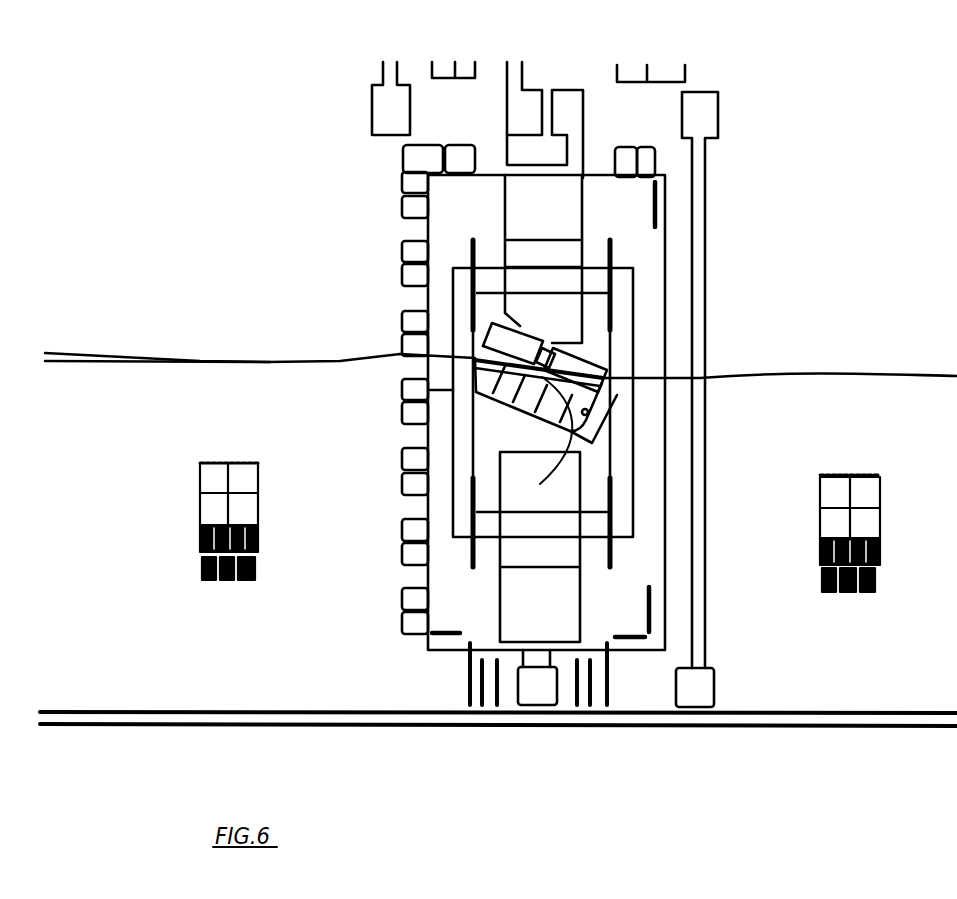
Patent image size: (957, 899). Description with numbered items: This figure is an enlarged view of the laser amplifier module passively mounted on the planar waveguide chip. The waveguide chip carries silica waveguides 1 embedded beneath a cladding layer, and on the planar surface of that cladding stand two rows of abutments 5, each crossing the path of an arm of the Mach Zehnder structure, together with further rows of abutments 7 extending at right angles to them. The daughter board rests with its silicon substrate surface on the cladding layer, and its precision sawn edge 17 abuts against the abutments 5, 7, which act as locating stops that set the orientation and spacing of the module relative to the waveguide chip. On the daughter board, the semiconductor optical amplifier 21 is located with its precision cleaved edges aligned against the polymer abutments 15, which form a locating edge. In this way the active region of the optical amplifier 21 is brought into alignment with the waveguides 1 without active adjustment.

The silica waveguides 1 is at (268, 362).
The abutments 5 is at (400, 602).
The abutments 7 is at (523, 115).
The SU-8 abutments 15 is at (547, 418).
The precision sawn edge of the daughter board 17 is at (585, 182).
The semiconductor optical amplifier 21 is at (580, 358).